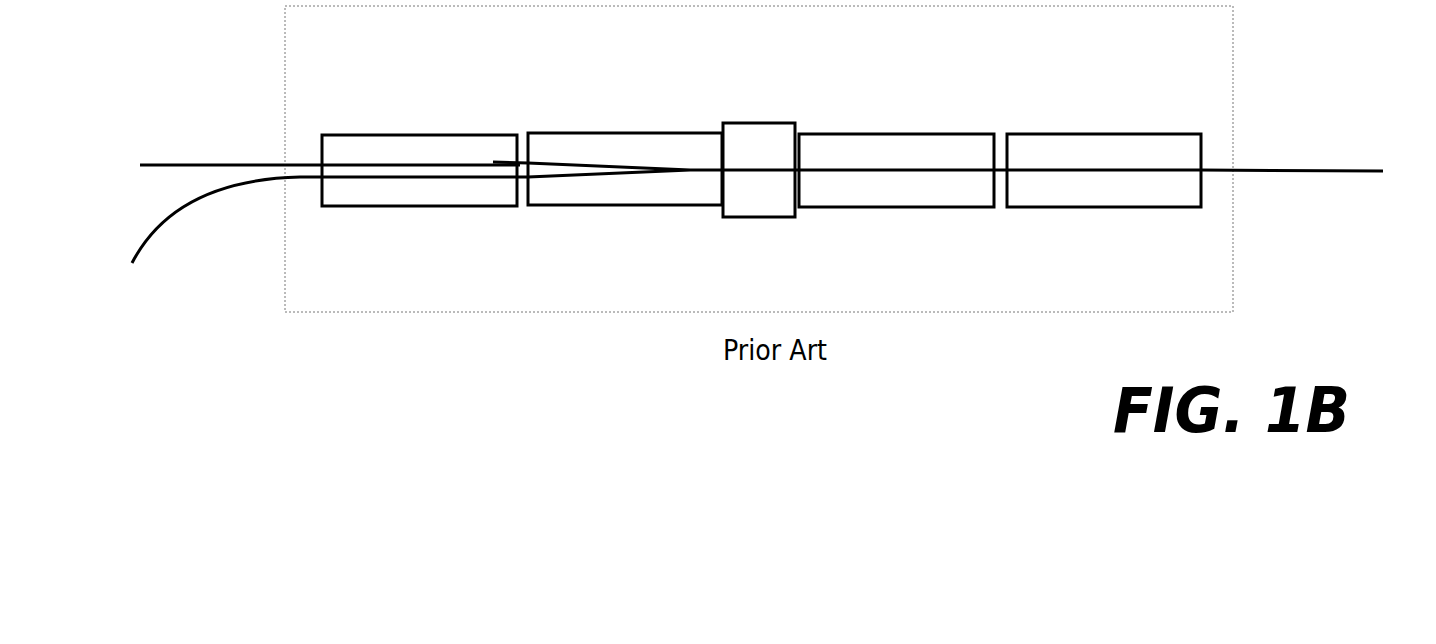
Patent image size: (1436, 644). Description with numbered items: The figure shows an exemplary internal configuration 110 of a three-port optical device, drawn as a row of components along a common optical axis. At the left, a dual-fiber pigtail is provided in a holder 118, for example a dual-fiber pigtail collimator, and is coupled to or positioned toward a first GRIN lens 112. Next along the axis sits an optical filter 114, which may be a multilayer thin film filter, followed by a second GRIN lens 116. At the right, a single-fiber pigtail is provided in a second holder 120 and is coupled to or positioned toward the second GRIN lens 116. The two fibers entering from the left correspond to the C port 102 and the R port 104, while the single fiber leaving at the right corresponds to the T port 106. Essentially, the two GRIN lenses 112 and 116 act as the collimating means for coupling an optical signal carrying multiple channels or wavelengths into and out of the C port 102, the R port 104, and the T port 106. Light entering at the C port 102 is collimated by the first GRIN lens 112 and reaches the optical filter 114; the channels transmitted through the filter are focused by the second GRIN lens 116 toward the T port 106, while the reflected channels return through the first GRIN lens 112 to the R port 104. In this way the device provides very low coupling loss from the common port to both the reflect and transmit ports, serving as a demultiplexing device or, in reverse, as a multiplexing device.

The C port 102 is at (327, 127).
The R port 104 is at (330, 241).
The T port 106 is at (1302, 123).
The internal configuration 110 is at (759, 159).
The first GRIN lens 112 is at (625, 132).
The optical filter 114 is at (760, 138).
The second GRIN lens 116 is at (903, 133).
The holder 118 is at (419, 134).
The second holder 120 is at (1104, 133).